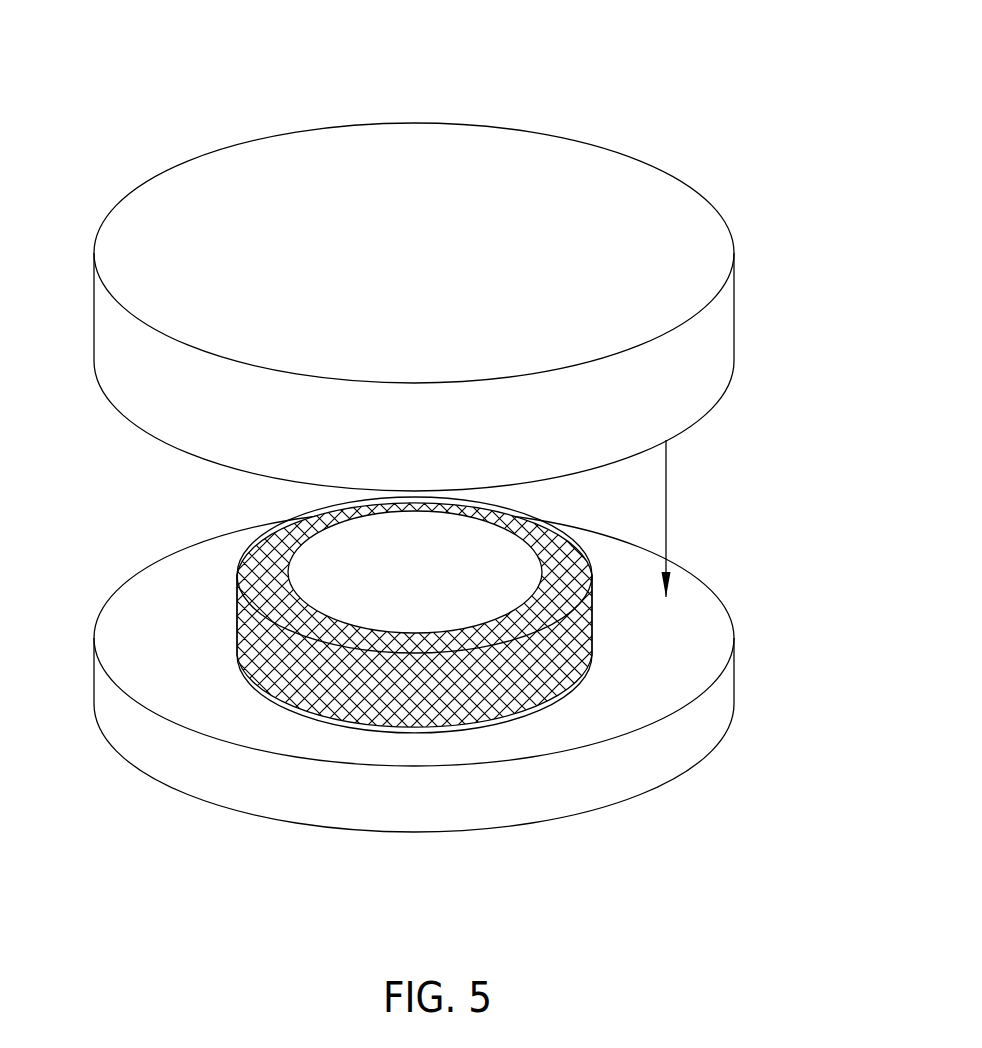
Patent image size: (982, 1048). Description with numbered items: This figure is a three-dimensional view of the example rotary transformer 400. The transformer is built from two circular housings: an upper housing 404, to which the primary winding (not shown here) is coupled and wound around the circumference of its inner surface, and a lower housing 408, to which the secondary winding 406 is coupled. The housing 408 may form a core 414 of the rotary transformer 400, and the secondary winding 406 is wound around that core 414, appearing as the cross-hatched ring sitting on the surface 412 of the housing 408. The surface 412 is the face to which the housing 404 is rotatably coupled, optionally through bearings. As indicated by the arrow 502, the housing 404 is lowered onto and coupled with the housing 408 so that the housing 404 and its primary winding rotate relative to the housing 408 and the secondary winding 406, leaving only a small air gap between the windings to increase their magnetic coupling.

The rotary transformer 400 is at (148, 57).
The housing 404 is at (735, 316).
The secondary winding 406 is at (466, 610).
The housing 408 is at (435, 671).
The surface 412 is at (148, 615).
The core 414 is at (473, 548).
The arrow 502 is at (668, 503).